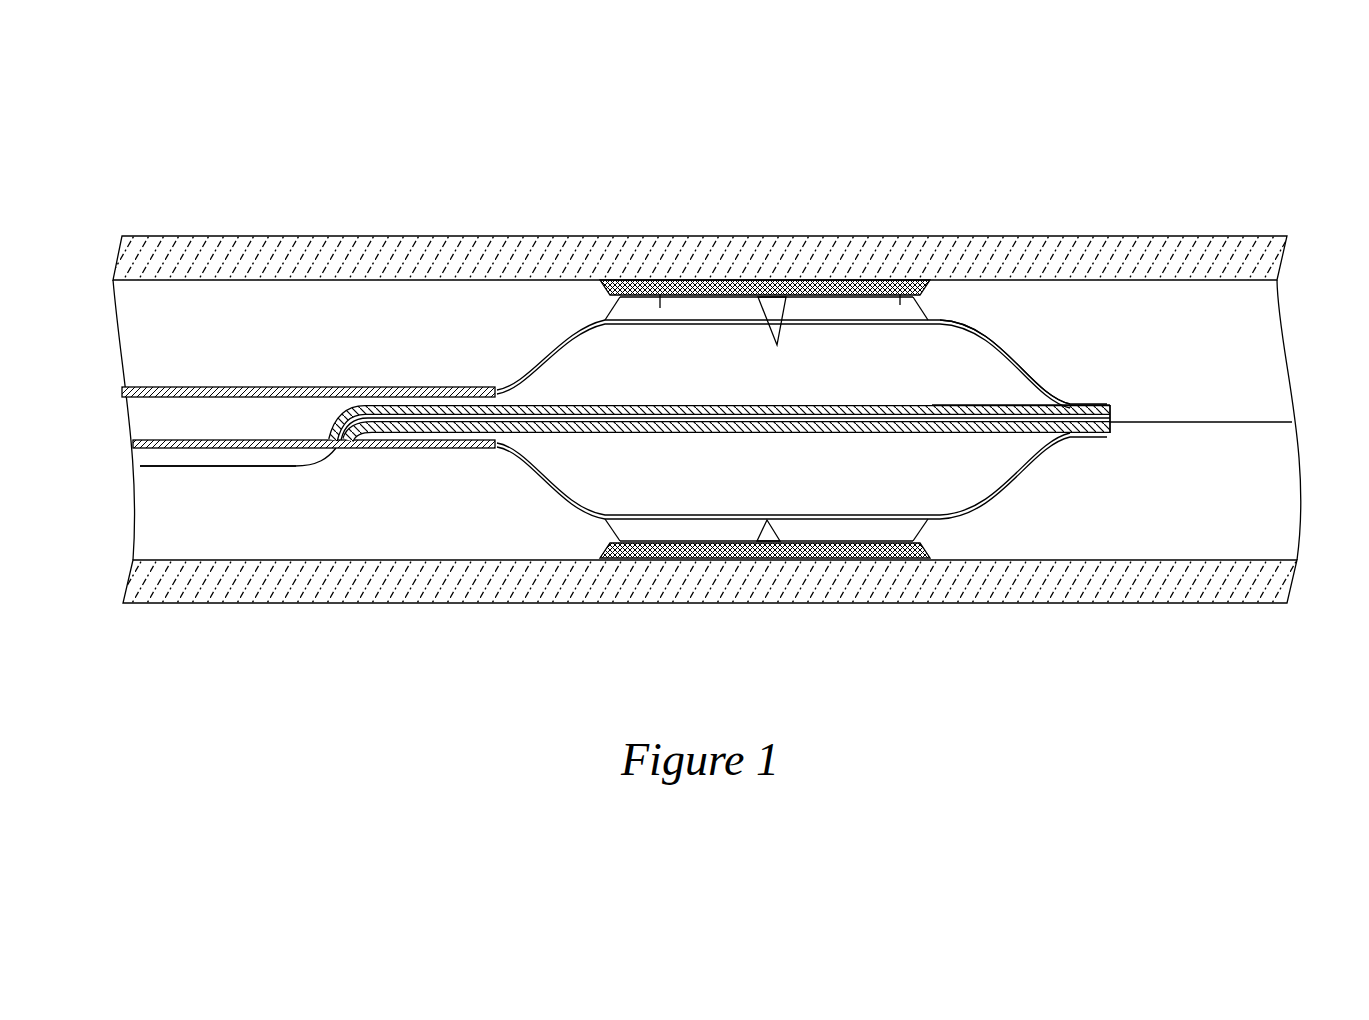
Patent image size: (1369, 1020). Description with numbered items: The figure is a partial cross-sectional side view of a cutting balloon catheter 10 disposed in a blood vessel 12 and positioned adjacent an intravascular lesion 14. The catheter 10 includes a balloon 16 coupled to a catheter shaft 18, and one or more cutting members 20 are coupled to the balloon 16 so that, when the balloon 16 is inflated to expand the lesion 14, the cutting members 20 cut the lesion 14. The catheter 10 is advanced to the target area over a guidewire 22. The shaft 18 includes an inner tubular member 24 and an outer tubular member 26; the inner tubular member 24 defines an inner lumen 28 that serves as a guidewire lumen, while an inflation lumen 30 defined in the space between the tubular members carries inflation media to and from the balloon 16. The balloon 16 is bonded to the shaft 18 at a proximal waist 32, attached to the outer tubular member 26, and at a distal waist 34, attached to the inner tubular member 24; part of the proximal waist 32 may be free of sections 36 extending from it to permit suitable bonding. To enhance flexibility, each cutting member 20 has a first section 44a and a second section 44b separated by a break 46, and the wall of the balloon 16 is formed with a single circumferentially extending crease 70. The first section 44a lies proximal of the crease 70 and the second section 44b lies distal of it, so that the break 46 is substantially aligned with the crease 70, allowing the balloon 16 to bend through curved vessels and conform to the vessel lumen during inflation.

The catheter 10 is at (325, 362).
The blood vessel 12 is at (630, 292).
The intravascular lesion 14 is at (727, 300).
The balloon 16 is at (541, 322).
The catheter shaft 18 is at (136, 370).
The cutting member 20 is at (804, 310).
The guidewire 22 is at (1230, 421).
The inner tubular member 24 is at (932, 405).
The outer tubular member 26 is at (195, 388).
The inner lumen 28 is at (1110, 420).
The inflation lumen 30 is at (393, 403).
The proximal waist 32 is at (515, 368).
The distal waist 34 is at (1010, 353).
The sections 36 is at (473, 448).
The first section 44a is at (660, 308).
The second section 44b is at (900, 305).
The break 46 is at (758, 297).
The crease 70 is at (789, 300).